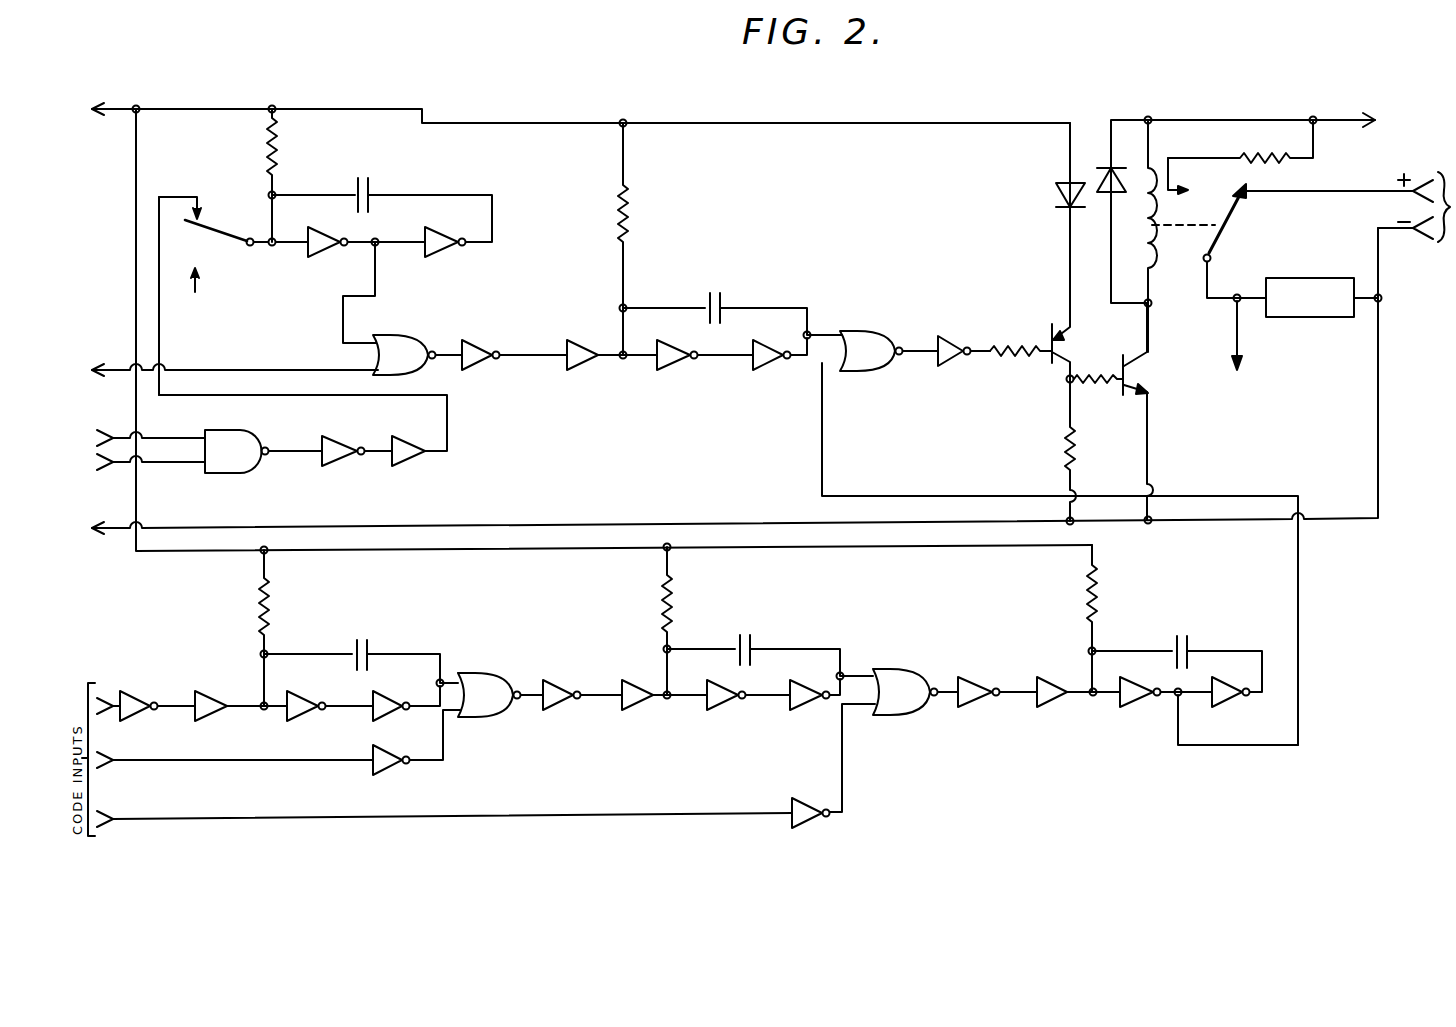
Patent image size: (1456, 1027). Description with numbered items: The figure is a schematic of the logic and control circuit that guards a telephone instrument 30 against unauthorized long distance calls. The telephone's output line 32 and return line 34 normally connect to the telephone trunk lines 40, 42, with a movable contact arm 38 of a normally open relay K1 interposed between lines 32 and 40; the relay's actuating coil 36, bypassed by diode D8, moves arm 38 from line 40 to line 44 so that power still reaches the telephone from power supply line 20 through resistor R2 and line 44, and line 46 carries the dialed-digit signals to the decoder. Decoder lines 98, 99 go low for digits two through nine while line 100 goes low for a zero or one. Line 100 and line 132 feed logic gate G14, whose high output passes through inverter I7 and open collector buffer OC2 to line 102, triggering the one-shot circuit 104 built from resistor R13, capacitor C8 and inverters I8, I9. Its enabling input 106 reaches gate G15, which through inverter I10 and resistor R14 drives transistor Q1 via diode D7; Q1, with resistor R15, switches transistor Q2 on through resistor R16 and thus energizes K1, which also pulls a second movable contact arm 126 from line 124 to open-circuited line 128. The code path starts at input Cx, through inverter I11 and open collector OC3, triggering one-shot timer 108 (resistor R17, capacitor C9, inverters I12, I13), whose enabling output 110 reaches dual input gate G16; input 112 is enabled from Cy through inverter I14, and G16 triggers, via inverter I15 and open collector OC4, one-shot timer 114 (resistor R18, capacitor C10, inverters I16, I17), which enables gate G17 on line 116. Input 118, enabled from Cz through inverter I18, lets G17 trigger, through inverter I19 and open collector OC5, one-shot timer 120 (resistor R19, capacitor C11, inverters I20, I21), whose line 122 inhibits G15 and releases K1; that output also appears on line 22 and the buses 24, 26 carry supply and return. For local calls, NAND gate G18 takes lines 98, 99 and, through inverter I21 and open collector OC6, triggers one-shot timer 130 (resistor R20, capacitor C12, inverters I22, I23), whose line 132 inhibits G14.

The power supply line 20 is at (1341, 118).
The oscillator output line 22 is at (1240, 746).
The first output bus line 24 is at (124, 109).
The ground/return bus line 26 is at (128, 534).
The telephone instrument 30 is at (1302, 318).
The output line 32 is at (1222, 292).
The return line 34 is at (1364, 318).
The actuating coil 36 is at (1157, 246).
The movable contact arm 38 is at (1228, 220).
The telephone trunk line 40 is at (1355, 196).
The telephone trunk line 42 is at (1380, 262).
The line 44 is at (1172, 172).
The line 46 is at (1240, 348).
The line 98 is at (115, 432).
The line 99 is at (116, 468).
The line 100 is at (98, 362).
The line 102 is at (598, 342).
The one-shot circuit 104 is at (929, 434).
The enabling input 106 is at (814, 330).
The one-shot timer 108 is at (331, 672).
The enabling output 110 is at (490, 653).
The input 112 is at (443, 748).
The one-shot timer 114 is at (750, 712).
The line 116 is at (856, 676).
The input 118 is at (844, 768).
The one-shot timer 120 is at (1128, 668).
The line 122 is at (822, 440).
The line 124 is at (160, 338).
The second movable contact arm 126 is at (222, 232).
The open-circuited line 128 is at (197, 286).
The one-shot timer 130 is at (368, 252).
The line 132 is at (352, 302).
The resistor R20 is at (280, 157).
The capacitor C12 is at (370, 188).
The inverter I22 is at (325, 258).
The inverter I23 is at (445, 256).
The logic gate G14 is at (402, 336).
The inverter I7 is at (484, 343).
The open collector buffer OC2 is at (590, 372).
The inverter I8 is at (672, 372).
The inverter I9 is at (768, 372).
The resistor R13 is at (632, 216).
The capacitor C8 is at (708, 302).
The gate G15 is at (868, 330).
The inverter I10 is at (944, 345).
The resistor R14 is at (1000, 362).
The transistor Q1 is at (1050, 332).
The resistor R15 is at (1060, 434).
The resistor R16 is at (1094, 374).
The transistor Q2 is at (1118, 388).
The diode D7 is at (1058, 200).
The diode D8 is at (1106, 196).
The relay K1 is at (1188, 298).
The resistor R2 is at (1252, 158).
The NAND gate G18 is at (236, 474).
The inverter I21 is at (334, 468).
The open collector OC6 is at (412, 468).
The resistor R17 is at (270, 606).
The capacitor C9 is at (356, 640).
The inverter I11 is at (144, 690).
The open collector OC3 is at (216, 690).
The inverter I12 is at (300, 716).
The inverter I13 is at (396, 690).
The inverter I14 is at (388, 770).
The dual input gate G16 is at (490, 718).
The inverter I15 is at (566, 685).
The open collector OC4 is at (640, 712).
The inverter I16 is at (724, 712).
The inverter I17 is at (808, 712).
The gate G17 is at (902, 716).
The inverter I18 is at (812, 830).
The inverter I19 is at (980, 684).
The open collector OC5 is at (1052, 710).
The resistor R18 is at (674, 598).
The capacitor C10 is at (752, 640).
The resistor R19 is at (1100, 594).
The capacitor C11 is at (1190, 642).
The inverter I20 is at (1138, 710).
The code input line Cx is at (110, 710).
The code input line Cy is at (114, 764).
The code input line Cz is at (114, 822).